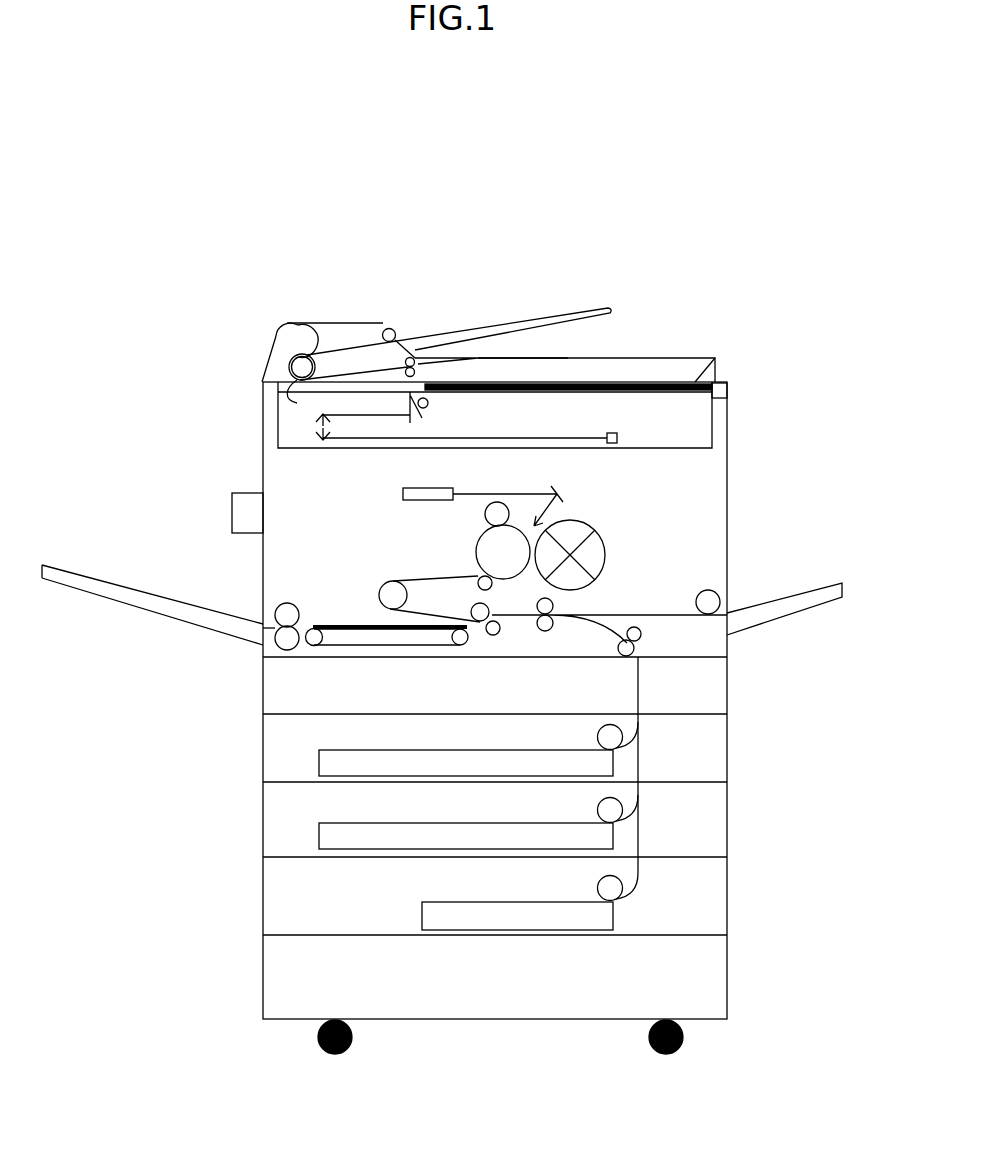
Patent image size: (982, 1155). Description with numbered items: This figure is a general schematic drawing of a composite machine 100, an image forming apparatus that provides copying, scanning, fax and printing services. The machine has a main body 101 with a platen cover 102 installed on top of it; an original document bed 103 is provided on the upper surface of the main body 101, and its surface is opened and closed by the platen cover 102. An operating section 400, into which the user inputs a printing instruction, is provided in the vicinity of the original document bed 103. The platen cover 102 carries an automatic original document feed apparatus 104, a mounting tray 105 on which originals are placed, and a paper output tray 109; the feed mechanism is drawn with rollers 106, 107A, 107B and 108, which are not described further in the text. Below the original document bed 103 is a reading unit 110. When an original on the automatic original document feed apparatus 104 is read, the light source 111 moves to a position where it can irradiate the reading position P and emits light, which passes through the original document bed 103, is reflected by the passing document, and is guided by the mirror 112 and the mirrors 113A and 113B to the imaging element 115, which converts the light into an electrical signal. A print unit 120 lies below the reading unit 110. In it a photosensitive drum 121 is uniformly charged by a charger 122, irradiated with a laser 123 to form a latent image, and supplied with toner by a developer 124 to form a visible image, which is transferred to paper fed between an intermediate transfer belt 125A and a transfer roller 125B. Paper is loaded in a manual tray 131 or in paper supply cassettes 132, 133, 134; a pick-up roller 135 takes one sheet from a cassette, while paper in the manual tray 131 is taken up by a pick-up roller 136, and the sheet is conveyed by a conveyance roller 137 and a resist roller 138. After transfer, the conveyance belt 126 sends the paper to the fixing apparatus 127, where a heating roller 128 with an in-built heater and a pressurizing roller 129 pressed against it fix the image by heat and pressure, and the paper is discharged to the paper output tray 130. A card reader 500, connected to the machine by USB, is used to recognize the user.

The composite machine 100 is at (676, 232).
The main body 101 is at (718, 435).
The platen cover 102 is at (665, 358).
The original document bed 103 is at (715, 358).
The operating section 400 is at (718, 380).
The automatic original document feed apparatus 104 is at (325, 330).
The mounting tray 105 is at (572, 312).
The pickup roller 106 is at (391, 329).
The feed roller 107A is at (265, 347).
The feed path 107B is at (447, 357).
The conveyance roller 108 is at (297, 327).
The paper output tray 109 is at (568, 358).
The reading unit 110 is at (727, 393).
The light source 111 is at (430, 402).
The mirror 112 is at (410, 420).
The mirror 113A is at (318, 415).
The mirror 113B is at (318, 440).
The imaging element 115 is at (617, 438).
The reading position P is at (262, 382).
The card reader 500 is at (237, 512).
The print unit 120 is at (712, 473).
The photosensitive drum 121 is at (478, 540).
The charger 122 is at (486, 508).
The laser 123 is at (403, 493).
The developer 124 is at (600, 540).
The intermediate transfer belt 125A is at (397, 582).
The transfer roller 125B is at (493, 636).
The conveyance belt 126 is at (330, 626).
The fixing apparatus 127 is at (187, 603).
The heating roller 128 is at (279, 630).
The pressurizing roller 129 is at (280, 605).
The paper output tray 130 is at (53, 570).
The manual tray 131 is at (783, 608).
The paper supply cassette 132 is at (319, 762).
The paper supply cassette 133 is at (319, 838).
The paper supply cassette 134 is at (422, 915).
The pick-up roller 135 is at (605, 888).
The pick-up roller for the manual feed tray 136 is at (712, 598).
The conveyance roller 137 is at (640, 640).
The resist roller 138 is at (548, 632).